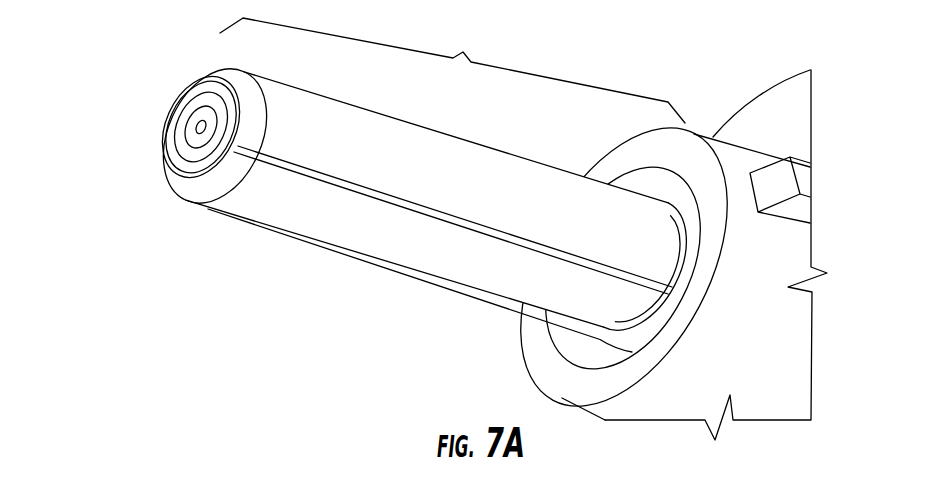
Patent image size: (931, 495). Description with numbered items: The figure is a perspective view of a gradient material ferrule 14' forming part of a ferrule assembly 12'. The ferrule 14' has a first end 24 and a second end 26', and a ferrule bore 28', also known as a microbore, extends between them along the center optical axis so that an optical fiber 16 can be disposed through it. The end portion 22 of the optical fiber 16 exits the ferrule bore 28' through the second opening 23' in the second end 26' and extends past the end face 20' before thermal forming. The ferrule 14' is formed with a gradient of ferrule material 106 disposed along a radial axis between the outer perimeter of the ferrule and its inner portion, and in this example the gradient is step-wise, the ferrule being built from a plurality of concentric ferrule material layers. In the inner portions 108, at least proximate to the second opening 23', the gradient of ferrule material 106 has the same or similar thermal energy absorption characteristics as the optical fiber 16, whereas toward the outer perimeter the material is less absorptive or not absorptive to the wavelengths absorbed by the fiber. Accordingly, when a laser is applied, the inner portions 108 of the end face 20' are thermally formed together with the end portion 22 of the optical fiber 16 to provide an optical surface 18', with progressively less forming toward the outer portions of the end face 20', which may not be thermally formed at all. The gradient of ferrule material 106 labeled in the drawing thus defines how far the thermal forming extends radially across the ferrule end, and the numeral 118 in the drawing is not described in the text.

The ferrule assembly 12' is at (452, 70).
The gradient material ferrule 14' is at (414, 191).
The optical fiber 16 is at (400, 194).
The optical surface 18' is at (182, 108).
The end face 20' is at (182, 138).
The end portion 22 is at (191, 88).
The second opening 23' is at (157, 139).
The first end 24 is at (596, 340).
The second end 26' is at (173, 129).
The ferrule bore 28' is at (420, 280).
The gradient of ferrule material 106 is at (187, 224).
The inner portion 108 is at (207, 110).
The shoulder 118 is at (181, 175).